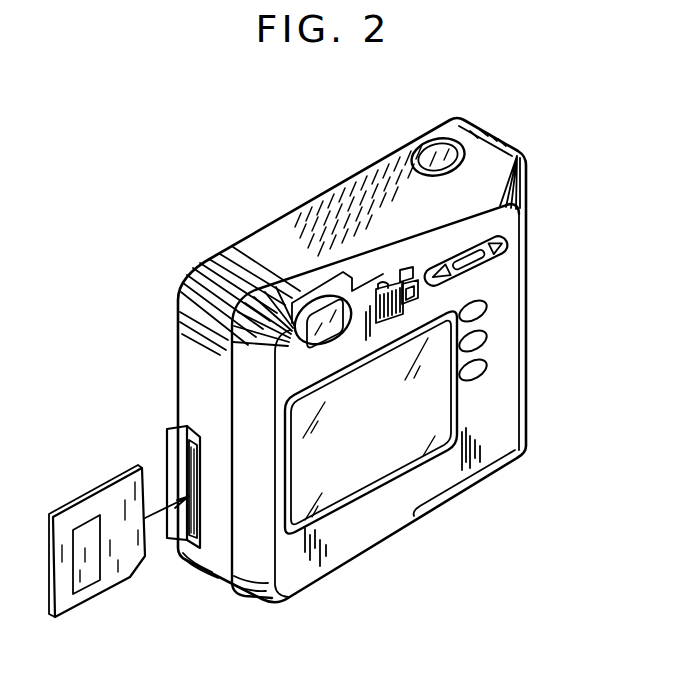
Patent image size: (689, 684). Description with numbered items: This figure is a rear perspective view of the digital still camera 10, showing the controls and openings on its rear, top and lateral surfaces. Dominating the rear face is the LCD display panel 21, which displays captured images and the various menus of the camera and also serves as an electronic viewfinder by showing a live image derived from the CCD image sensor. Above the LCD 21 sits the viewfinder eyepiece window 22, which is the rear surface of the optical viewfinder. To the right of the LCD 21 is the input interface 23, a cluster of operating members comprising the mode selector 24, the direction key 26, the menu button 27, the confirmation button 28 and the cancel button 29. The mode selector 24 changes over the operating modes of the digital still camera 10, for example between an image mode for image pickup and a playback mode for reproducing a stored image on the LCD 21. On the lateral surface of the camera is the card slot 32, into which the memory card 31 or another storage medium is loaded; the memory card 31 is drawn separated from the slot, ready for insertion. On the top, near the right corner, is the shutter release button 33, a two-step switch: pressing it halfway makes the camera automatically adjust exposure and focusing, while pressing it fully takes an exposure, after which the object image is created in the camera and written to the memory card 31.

The digital still camera 10 is at (164, 192).
The LCD display panel 21 is at (390, 457).
The viewfinder eyepiece window 22 is at (318, 322).
The input interface 23 is at (534, 366).
The mode selector 24 is at (420, 302).
The direction key 26 is at (509, 242).
The menu button 27 is at (488, 308).
The confirmation button 28 is at (488, 340).
The cancel button 29 is at (488, 369).
The memory card 31 is at (100, 495).
The card slot 32 is at (193, 437).
The shutter release button 33 is at (432, 163).